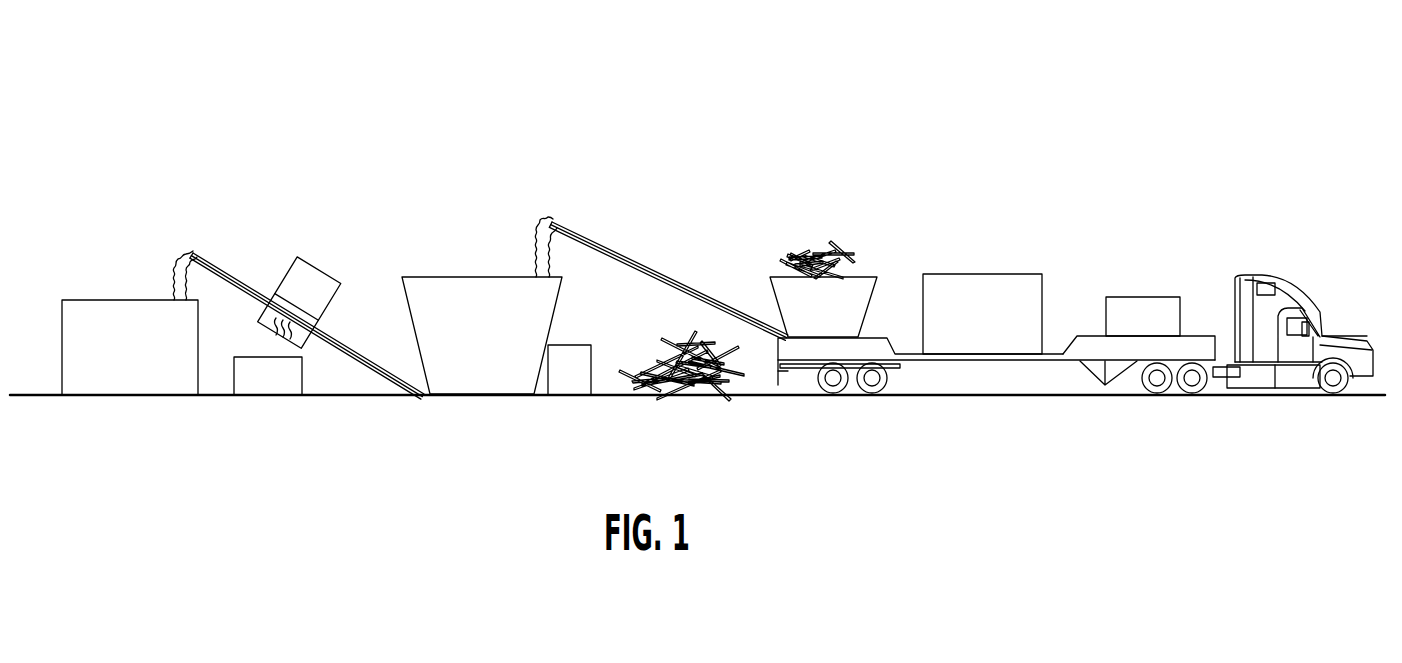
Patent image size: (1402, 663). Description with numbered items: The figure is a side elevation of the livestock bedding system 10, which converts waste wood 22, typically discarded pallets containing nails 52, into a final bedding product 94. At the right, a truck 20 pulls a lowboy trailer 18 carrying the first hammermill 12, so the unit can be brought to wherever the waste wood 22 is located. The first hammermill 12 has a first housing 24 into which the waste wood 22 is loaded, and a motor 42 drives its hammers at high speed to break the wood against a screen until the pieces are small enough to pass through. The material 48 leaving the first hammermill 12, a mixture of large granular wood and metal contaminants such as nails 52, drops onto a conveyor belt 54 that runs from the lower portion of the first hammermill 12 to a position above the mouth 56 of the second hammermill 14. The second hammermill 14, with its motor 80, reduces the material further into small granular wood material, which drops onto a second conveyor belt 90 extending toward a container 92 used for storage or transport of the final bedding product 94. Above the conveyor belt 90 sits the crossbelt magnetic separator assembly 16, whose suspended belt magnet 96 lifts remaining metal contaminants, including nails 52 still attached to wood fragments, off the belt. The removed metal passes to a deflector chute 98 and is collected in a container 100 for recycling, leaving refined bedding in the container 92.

The system 10 is at (717, 104).
The first hammermill 12 is at (992, 280).
The second hammermill 14 is at (437, 235).
The crossbelt magnetic separator assembly 16 is at (287, 300).
The lowboy trailer 18 is at (1066, 327).
The truck 20 is at (1226, 262).
The waste wood 22 is at (652, 406).
The first housing 24 is at (877, 277).
The motor 42 is at (982, 273).
The material 48 is at (668, 250).
The nails 52 is at (289, 397).
The conveyor belt 54 is at (648, 260).
The mouth 56 is at (510, 252).
The motor 80 is at (552, 385).
The conveyor belt 90 is at (216, 257).
The container 92 is at (100, 279).
The final bedding product 94 is at (165, 252).
The belt magnet 96 is at (333, 282).
The deflector chute 98 is at (254, 323).
The container 100 is at (258, 397).